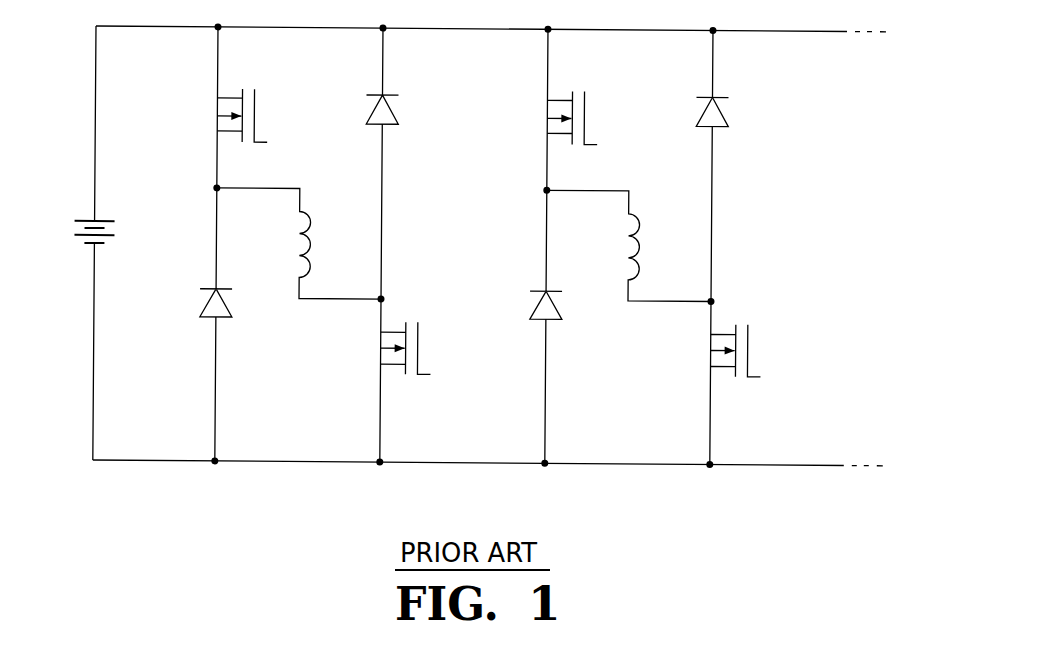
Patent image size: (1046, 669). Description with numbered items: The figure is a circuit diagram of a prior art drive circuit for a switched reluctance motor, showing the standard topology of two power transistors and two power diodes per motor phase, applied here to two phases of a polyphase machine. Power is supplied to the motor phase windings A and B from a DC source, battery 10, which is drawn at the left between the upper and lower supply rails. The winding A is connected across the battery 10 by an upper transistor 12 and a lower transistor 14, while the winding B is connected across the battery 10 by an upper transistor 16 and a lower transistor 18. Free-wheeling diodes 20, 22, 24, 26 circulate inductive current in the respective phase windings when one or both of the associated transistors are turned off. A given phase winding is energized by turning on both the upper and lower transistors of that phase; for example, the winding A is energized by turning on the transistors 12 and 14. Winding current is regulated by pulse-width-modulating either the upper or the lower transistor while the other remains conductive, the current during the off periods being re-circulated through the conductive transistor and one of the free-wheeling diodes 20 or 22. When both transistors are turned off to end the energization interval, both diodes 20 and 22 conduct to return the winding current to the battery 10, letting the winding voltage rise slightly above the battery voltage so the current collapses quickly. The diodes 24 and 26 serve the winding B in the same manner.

The battery 10 is at (88, 220).
The transistor 12 is at (232, 97).
The transistor 14 is at (394, 361).
The transistor 16 is at (562, 95).
The transistor 18 is at (722, 362).
The free-wheeling diode 20 is at (231, 303).
The free-wheeling diode 22 is at (394, 107).
The free-wheeling diode 24 is at (561, 300).
The free-wheeling diode 26 is at (725, 105).
The phase winding A is at (313, 242).
The phase winding B is at (643, 239).